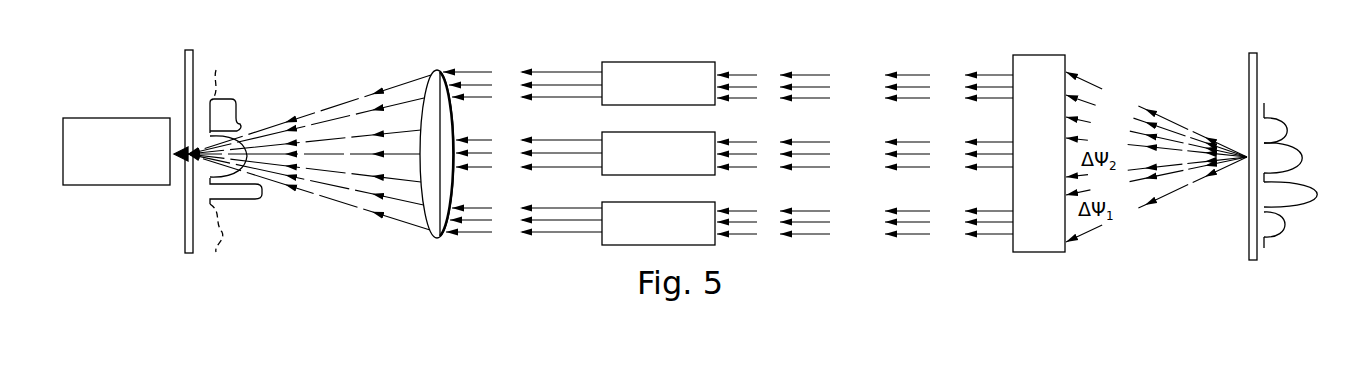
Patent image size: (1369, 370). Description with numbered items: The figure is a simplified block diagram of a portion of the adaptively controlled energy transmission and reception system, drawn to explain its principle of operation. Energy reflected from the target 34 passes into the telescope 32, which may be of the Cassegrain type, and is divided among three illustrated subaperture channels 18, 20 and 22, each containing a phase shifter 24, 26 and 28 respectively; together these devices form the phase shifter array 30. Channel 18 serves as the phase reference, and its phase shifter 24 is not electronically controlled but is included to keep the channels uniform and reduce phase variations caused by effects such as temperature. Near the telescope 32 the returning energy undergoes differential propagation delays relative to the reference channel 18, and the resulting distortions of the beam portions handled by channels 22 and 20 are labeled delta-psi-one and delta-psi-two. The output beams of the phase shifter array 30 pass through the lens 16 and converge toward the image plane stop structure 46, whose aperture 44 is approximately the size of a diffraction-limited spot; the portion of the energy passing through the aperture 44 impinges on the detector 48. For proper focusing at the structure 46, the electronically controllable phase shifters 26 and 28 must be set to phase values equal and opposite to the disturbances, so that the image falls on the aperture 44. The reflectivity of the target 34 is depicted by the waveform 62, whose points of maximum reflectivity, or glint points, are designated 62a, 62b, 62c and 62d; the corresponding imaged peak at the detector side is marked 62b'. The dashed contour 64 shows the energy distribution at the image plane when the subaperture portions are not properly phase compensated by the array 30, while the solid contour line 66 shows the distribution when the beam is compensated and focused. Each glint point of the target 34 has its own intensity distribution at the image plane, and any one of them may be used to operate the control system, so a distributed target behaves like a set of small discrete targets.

The lens 16 is at (440, 70).
The subaperture channel 18 is at (874, 92).
The subaperture channel 20 is at (878, 164).
The subaperture channel 22 is at (880, 234).
The phase shifter 24 is at (602, 70).
The phase shifter 26 is at (602, 136).
The phase shifter 28 is at (602, 205).
The phase shifter array 30 is at (716, 50).
The telescope 32 is at (1064, 56).
The target 34 is at (1252, 261).
The aperture 44 is at (188, 164).
The image plane stop structure 46 is at (188, 257).
The detector 48 is at (98, 118).
The waveform 62 is at (1275, 104).
The glint point 62a is at (1289, 127).
The glint point 62b is at (1301, 158).
The glint point 62c is at (1320, 194).
The glint point 62d is at (1300, 225).
The image of second peak 62b' is at (263, 156).
The dashed contour 64 is at (231, 246).
The solid contour line 66 is at (235, 112).